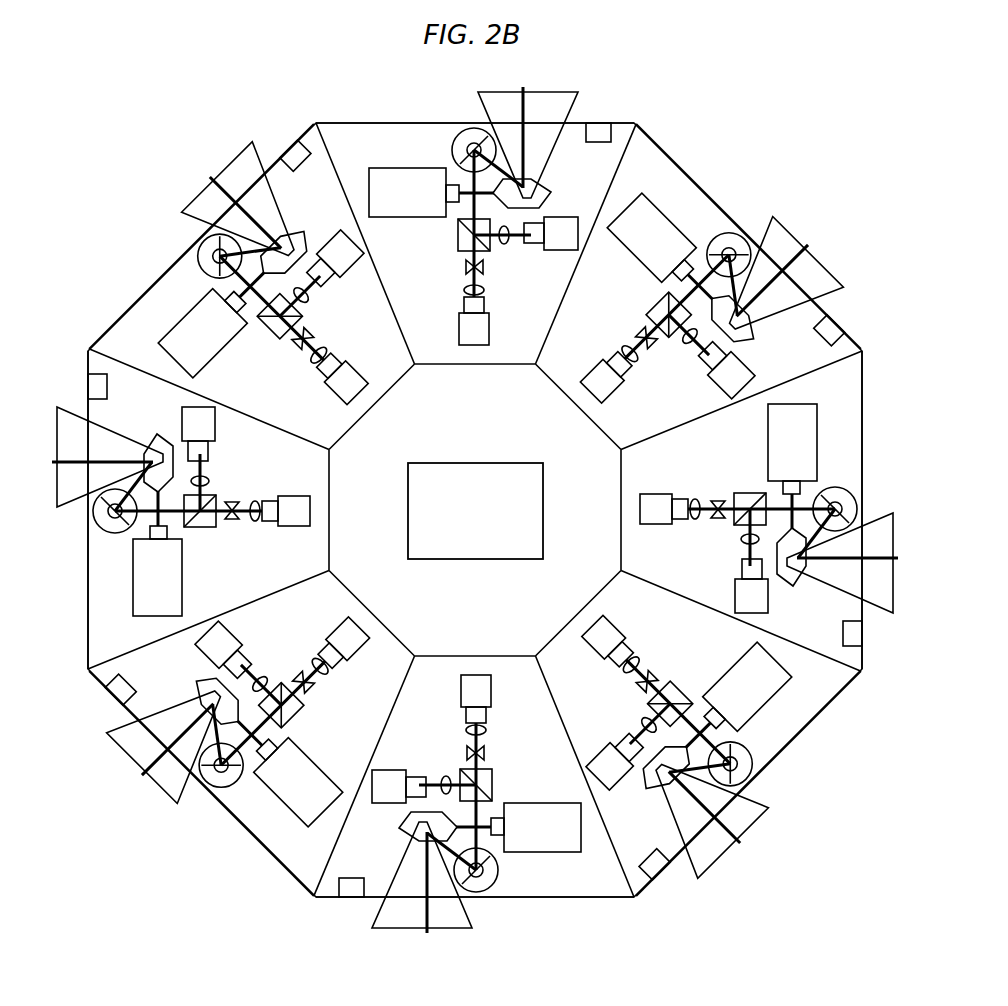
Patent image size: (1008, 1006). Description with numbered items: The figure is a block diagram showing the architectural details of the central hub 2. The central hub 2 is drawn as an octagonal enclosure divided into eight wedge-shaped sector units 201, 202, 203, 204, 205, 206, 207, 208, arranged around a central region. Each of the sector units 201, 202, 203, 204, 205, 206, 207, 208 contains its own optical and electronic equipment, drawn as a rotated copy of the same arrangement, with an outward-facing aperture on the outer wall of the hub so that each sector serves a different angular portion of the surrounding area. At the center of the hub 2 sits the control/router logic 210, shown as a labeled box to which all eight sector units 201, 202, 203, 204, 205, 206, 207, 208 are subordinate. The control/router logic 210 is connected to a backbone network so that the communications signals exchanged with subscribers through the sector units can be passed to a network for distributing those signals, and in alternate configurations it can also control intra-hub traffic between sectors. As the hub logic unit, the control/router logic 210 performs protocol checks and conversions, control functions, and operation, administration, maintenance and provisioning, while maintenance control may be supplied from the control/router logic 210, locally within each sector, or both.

The central hub 2 is at (786, 155).
The sector unit 201 is at (358, 122).
The sector unit 202 is at (135, 300).
The sector unit 203 is at (90, 610).
The sector unit 204 is at (283, 866).
The sector unit 205 is at (603, 898).
The sector unit 206 is at (818, 716).
The sector unit 207 is at (862, 407).
The sector unit 208 is at (680, 168).
The control/router logic 210 is at (452, 463).